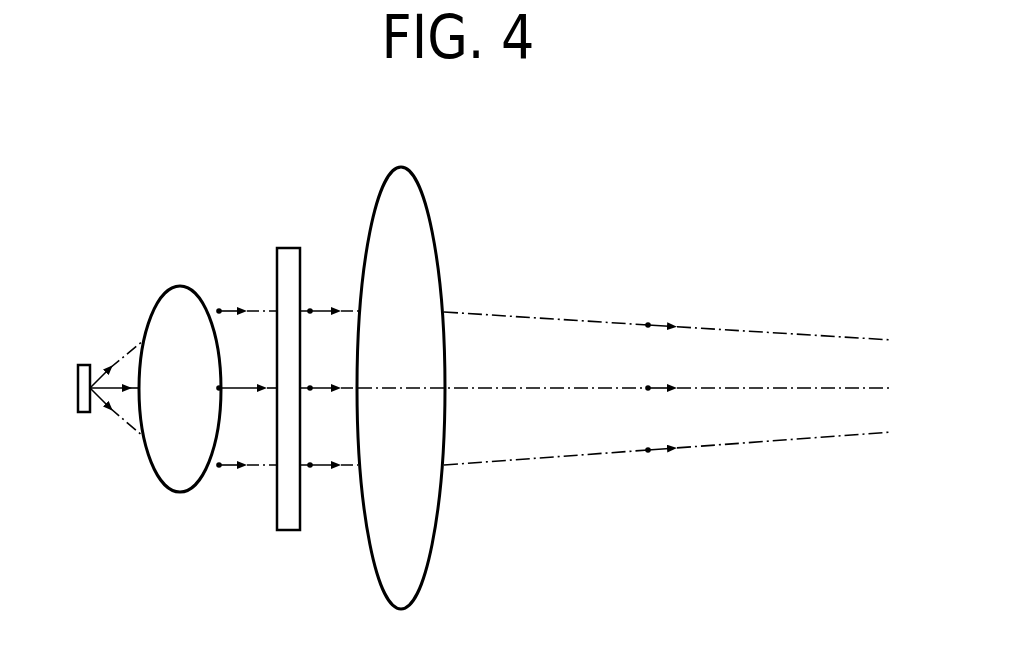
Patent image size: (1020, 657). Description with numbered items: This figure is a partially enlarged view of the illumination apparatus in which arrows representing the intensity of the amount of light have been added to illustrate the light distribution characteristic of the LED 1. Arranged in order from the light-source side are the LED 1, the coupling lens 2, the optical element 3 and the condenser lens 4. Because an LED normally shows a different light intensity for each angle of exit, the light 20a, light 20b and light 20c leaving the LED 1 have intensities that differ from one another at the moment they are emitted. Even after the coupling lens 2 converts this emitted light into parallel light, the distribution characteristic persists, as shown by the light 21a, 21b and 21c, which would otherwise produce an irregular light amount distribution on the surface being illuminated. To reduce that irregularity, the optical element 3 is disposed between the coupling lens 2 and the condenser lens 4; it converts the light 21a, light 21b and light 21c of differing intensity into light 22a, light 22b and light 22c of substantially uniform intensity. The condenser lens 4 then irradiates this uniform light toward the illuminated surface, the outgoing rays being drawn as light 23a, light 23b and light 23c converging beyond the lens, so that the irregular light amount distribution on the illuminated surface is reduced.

The LED 1 is at (78, 370).
The coupling lens 2 is at (164, 290).
The optical element 3 is at (284, 248).
The condenser lens 4 is at (412, 173).
The light 20a is at (92, 365).
The light 20b is at (122, 392).
The light 20c is at (105, 407).
The light 21a is at (228, 309).
The light 21b is at (237, 386).
The light 21c is at (228, 467).
The light 22a is at (320, 309).
The light 22b is at (323, 386).
The light 22c is at (321, 468).
The light ray after second lens 23a is at (657, 323).
The light ray after second lens 23b is at (660, 385).
The light ray after second lens 23c is at (662, 448).